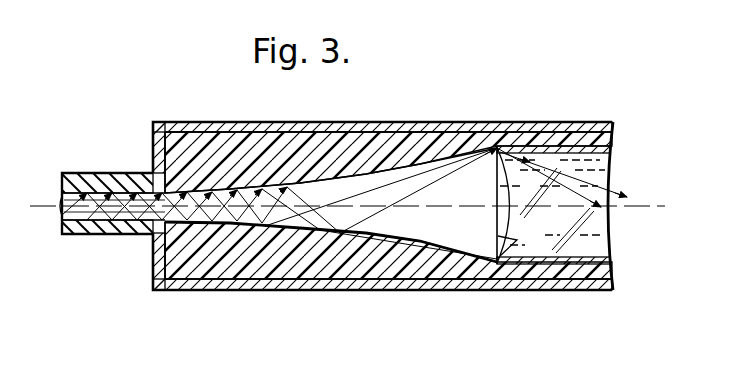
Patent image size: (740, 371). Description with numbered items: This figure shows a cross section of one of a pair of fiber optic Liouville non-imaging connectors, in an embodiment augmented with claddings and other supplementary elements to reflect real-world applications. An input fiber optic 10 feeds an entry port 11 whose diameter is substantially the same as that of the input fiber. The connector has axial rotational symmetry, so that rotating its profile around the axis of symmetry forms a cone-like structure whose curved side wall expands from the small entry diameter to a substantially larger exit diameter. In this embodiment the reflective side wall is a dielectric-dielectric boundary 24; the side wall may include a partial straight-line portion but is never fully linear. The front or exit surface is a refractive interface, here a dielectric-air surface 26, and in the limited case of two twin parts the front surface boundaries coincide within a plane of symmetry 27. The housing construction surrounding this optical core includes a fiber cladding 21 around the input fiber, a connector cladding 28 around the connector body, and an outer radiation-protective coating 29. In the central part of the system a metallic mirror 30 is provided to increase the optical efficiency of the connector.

The input fiber optic 10 is at (82, 195).
The entry port 11 is at (139, 184).
The fiber cladding 21 is at (116, 230).
The dielectric-dielectric boundary 24 is at (315, 233).
The dielectric-air front surface 26 is at (374, 172).
The plane of symmetry 27 is at (583, 238).
The connector cladding 28 is at (275, 260).
The radiation-protective coating 29 is at (262, 292).
The metallic mirror 30 is at (570, 265).